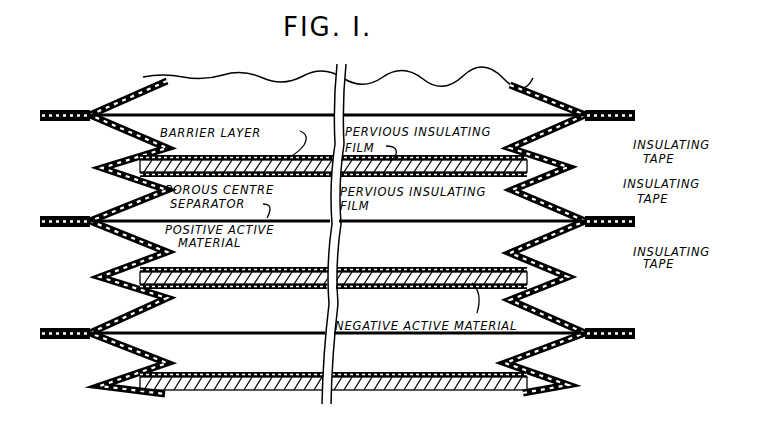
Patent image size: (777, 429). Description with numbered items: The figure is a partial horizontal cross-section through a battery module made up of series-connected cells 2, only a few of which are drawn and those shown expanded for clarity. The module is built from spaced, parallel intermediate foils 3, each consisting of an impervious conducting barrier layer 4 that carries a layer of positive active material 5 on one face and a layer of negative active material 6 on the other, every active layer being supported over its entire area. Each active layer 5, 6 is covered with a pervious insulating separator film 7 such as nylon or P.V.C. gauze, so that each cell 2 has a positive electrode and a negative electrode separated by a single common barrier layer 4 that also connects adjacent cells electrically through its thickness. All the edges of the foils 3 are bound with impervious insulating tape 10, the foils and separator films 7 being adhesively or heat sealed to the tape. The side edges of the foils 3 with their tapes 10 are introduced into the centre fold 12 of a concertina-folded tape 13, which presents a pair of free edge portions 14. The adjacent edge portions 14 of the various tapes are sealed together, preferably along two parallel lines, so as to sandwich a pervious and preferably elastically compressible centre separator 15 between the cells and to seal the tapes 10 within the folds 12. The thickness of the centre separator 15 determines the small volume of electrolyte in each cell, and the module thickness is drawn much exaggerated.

The cell 2 is at (163, 212).
The intermediate foil 3 is at (381, 284).
The barrier layer 4 is at (208, 292).
The positive active material layer 5 is at (415, 268).
The negative active material layer 6 is at (440, 287).
The pervious insulating separator film 7 is at (318, 291).
The insulating tape 10 is at (565, 179).
The centre fold 12 is at (627, 228).
The concertina-folded tape 13 is at (575, 157).
The free edge portion 14 is at (638, 260).
The centre separator 15 is at (232, 331).